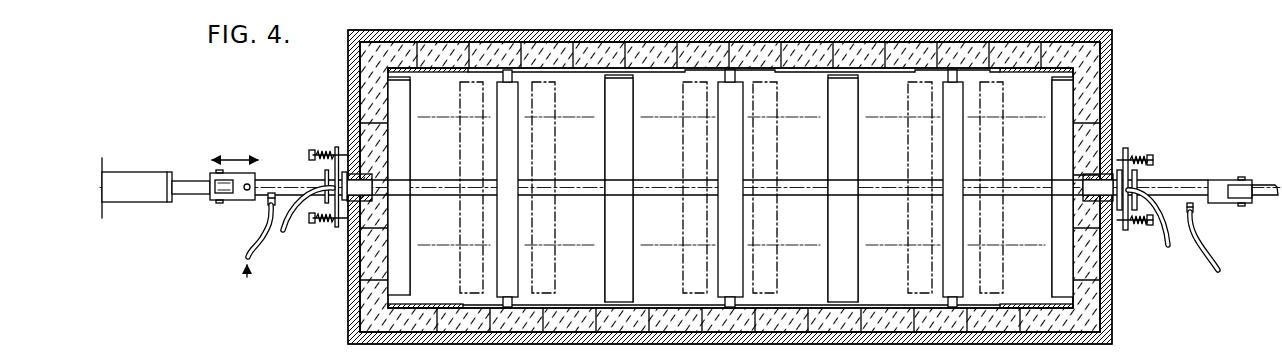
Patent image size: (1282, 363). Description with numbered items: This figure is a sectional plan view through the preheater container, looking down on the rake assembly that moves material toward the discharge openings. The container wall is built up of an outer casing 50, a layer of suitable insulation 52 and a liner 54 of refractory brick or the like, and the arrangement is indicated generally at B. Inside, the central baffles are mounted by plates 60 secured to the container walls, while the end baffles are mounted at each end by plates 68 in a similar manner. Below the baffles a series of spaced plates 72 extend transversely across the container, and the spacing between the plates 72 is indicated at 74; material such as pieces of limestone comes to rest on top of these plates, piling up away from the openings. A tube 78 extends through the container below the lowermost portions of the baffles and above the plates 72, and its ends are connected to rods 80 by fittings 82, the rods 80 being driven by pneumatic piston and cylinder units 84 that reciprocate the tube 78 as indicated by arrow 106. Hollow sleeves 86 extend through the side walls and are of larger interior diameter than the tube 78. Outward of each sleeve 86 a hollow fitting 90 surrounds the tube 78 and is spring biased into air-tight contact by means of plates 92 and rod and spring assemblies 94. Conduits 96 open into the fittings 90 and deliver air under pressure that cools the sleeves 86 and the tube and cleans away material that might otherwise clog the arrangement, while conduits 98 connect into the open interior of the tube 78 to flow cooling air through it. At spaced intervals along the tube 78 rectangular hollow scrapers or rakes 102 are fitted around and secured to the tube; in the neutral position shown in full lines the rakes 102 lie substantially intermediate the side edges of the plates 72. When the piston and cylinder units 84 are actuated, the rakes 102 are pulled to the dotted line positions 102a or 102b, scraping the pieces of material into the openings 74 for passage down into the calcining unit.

The outer casing 50 is at (1112, 283).
The layer of insulation 52 is at (1105, 335).
The liner 54 is at (1072, 267).
The plates 60 is at (667, 75).
The plates 68 is at (453, 73).
The spaced plates 72 is at (603, 268).
The spacing between the plates 74 is at (408, 117).
The tube 78 is at (647, 182).
The rods 80 is at (187, 181).
The fittings 82 is at (240, 200).
The pneumatic piston and cylinder units 84 is at (145, 197).
The hollow sleeves 86 is at (370, 175).
The hollow fitting 90 is at (327, 173).
The plates 92 is at (335, 230).
The rod and spring assemblies 94 is at (312, 153).
The conduits 96 is at (283, 233).
The conduits 98 is at (247, 250).
The scrapers or rakes 102 is at (497, 218).
The dotted line position of rakes 102a is at (462, 120).
The dotted line position of rakes 102b is at (553, 132).
The arrow 106 is at (235, 158).
The bath B is at (1115, 310).